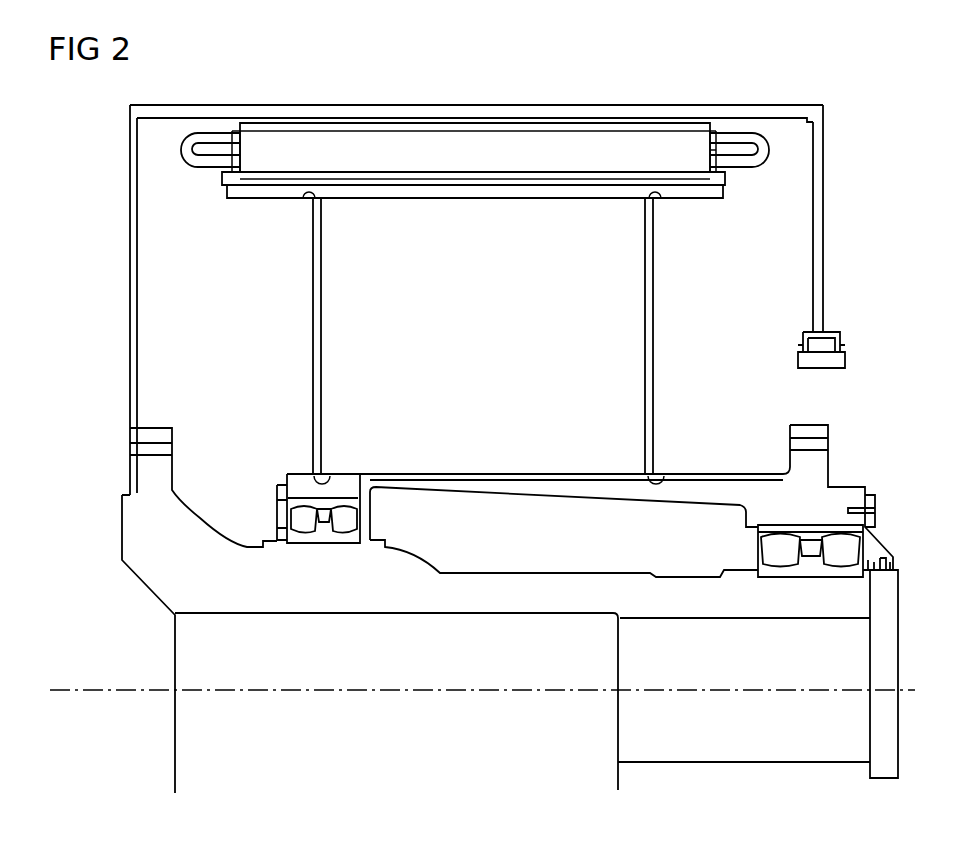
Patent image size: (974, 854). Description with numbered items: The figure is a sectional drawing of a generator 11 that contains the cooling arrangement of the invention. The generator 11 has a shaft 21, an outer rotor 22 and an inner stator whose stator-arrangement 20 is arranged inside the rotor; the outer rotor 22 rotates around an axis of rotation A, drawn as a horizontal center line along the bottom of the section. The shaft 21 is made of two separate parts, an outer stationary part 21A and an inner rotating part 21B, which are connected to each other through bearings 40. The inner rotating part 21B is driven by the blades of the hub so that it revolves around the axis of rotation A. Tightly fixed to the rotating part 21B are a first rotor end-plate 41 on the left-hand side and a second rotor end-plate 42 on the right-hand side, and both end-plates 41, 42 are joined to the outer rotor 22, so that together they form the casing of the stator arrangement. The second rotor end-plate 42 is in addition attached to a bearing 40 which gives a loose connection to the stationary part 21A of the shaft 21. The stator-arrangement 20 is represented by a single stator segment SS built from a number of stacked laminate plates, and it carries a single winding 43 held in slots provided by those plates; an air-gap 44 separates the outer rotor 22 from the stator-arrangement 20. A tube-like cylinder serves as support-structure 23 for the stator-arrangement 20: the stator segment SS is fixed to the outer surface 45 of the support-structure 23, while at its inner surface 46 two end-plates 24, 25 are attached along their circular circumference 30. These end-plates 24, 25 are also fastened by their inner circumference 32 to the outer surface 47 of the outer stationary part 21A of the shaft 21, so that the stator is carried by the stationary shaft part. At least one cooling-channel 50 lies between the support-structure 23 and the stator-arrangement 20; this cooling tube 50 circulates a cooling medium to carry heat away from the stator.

The generator 11 is at (858, 100).
The inner stator-arrangement 20 is at (506, 146).
The shaft 21 is at (122, 497).
The outer stationary part 21A is at (820, 466).
The inner rotating part 21B is at (862, 592).
The outer rotor 22 is at (432, 114).
The support-structure 23 is at (389, 188).
The end-plate 24 is at (312, 347).
The end-plate 25 is at (653, 347).
The circular circumference 30 is at (306, 198).
The inner circumference 32 is at (323, 480).
The bearing 40 is at (828, 346).
The first rotor end-plate 41 is at (130, 280).
The second rotor end-plate 42 is at (823, 215).
The winding 43 is at (184, 158).
The air-gap 44 is at (586, 128).
The outer surface 45 is at (521, 186).
The inner surface 46 is at (576, 199).
The outer surface 47 is at (494, 474).
The cooling-channel 50 is at (459, 182).
The stator segment SS is at (349, 147).
The axis of rotation A is at (59, 690).